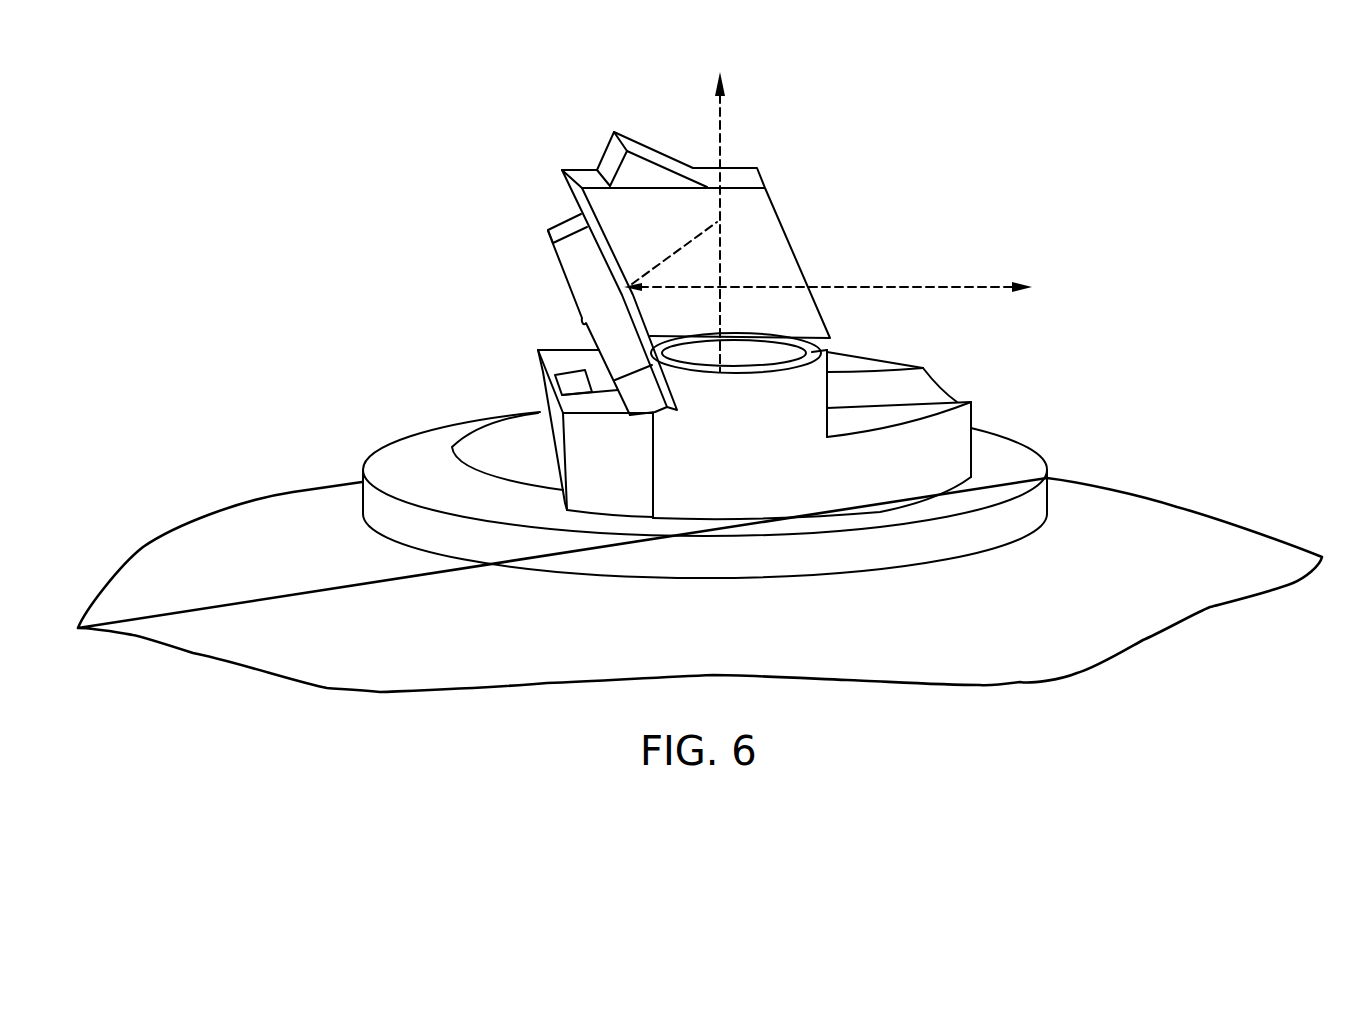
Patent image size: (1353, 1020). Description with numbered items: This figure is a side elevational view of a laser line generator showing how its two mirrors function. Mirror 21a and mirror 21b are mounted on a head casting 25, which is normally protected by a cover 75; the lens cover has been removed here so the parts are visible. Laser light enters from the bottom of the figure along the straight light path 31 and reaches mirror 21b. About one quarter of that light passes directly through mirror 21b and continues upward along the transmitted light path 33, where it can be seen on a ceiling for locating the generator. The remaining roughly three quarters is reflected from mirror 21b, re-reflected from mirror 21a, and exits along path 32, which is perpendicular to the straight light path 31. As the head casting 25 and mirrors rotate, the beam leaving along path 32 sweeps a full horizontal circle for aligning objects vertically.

The mirror 21a is at (572, 287).
The mirror 21b is at (610, 157).
The head casting 25 is at (973, 418).
The straight light path 31 is at (720, 308).
The path 32 is at (918, 287).
The transmitted light path 33 is at (720, 117).
The cover 75 is at (1176, 503).